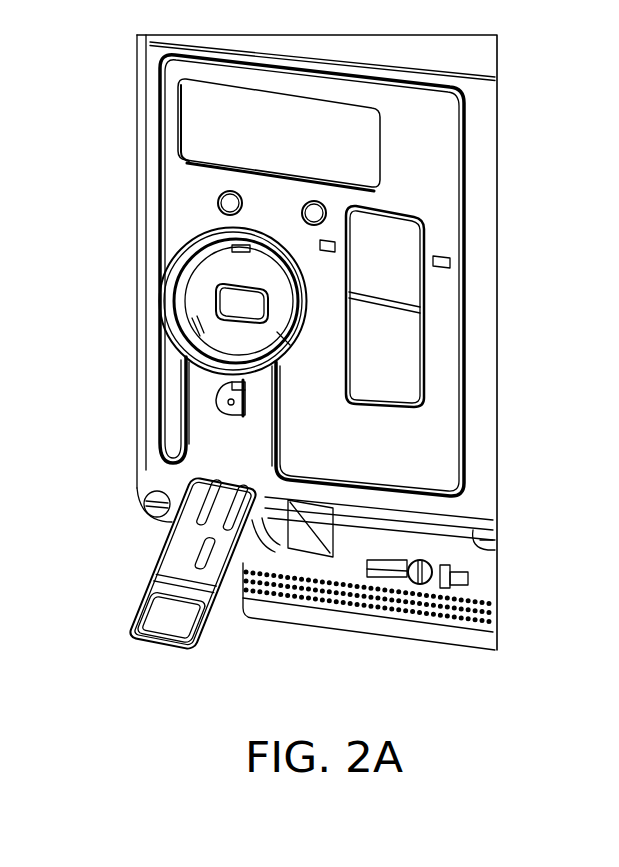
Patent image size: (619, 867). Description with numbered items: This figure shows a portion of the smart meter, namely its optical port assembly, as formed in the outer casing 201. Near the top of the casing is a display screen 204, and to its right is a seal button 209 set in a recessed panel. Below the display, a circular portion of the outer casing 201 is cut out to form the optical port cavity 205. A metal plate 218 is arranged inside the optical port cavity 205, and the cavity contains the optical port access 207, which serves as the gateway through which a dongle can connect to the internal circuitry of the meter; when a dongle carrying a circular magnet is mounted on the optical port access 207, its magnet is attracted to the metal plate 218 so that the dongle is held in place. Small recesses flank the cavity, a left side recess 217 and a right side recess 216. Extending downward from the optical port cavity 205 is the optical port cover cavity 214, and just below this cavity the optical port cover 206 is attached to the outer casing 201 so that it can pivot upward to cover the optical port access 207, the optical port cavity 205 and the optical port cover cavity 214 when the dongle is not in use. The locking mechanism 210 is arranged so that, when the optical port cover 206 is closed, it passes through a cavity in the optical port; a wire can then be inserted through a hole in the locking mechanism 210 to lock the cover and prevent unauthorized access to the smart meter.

The outer casing 201 is at (138, 62).
The display screen 204 is at (310, 140).
The optical port cavity 205 is at (200, 333).
The optical port cover 206 is at (165, 622).
The optical port access 207 is at (245, 307).
The seal button 209 is at (388, 358).
The locking mechanism 210 is at (243, 403).
The optical port cover cavity 214 is at (223, 440).
The right side recess 216 is at (447, 262).
The left side recess 217 is at (330, 246).
The metal plate 218 is at (202, 298).